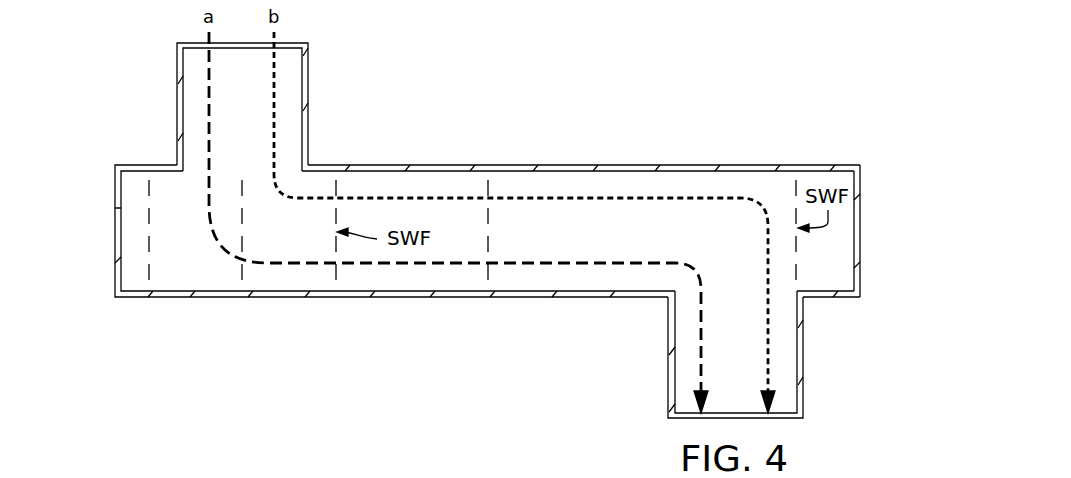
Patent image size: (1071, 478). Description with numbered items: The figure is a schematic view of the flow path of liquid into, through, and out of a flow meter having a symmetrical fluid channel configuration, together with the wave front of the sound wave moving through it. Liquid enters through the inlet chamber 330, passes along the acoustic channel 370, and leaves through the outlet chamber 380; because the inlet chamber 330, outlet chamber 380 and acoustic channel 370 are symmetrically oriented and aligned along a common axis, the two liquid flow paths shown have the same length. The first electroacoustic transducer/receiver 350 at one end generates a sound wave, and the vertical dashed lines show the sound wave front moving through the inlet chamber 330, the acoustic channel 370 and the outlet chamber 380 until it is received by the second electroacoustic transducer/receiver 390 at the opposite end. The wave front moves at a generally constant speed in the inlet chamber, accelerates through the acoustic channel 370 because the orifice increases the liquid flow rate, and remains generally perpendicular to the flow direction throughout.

The inlet chamber 330 is at (190, 105).
The first electroacoustic transducer/receiver 350 is at (110, 223).
The acoustic channel 370 is at (567, 178).
The outlet chamber 380 is at (787, 353).
The second electroacoustic transducer/receiver 390 is at (868, 224).